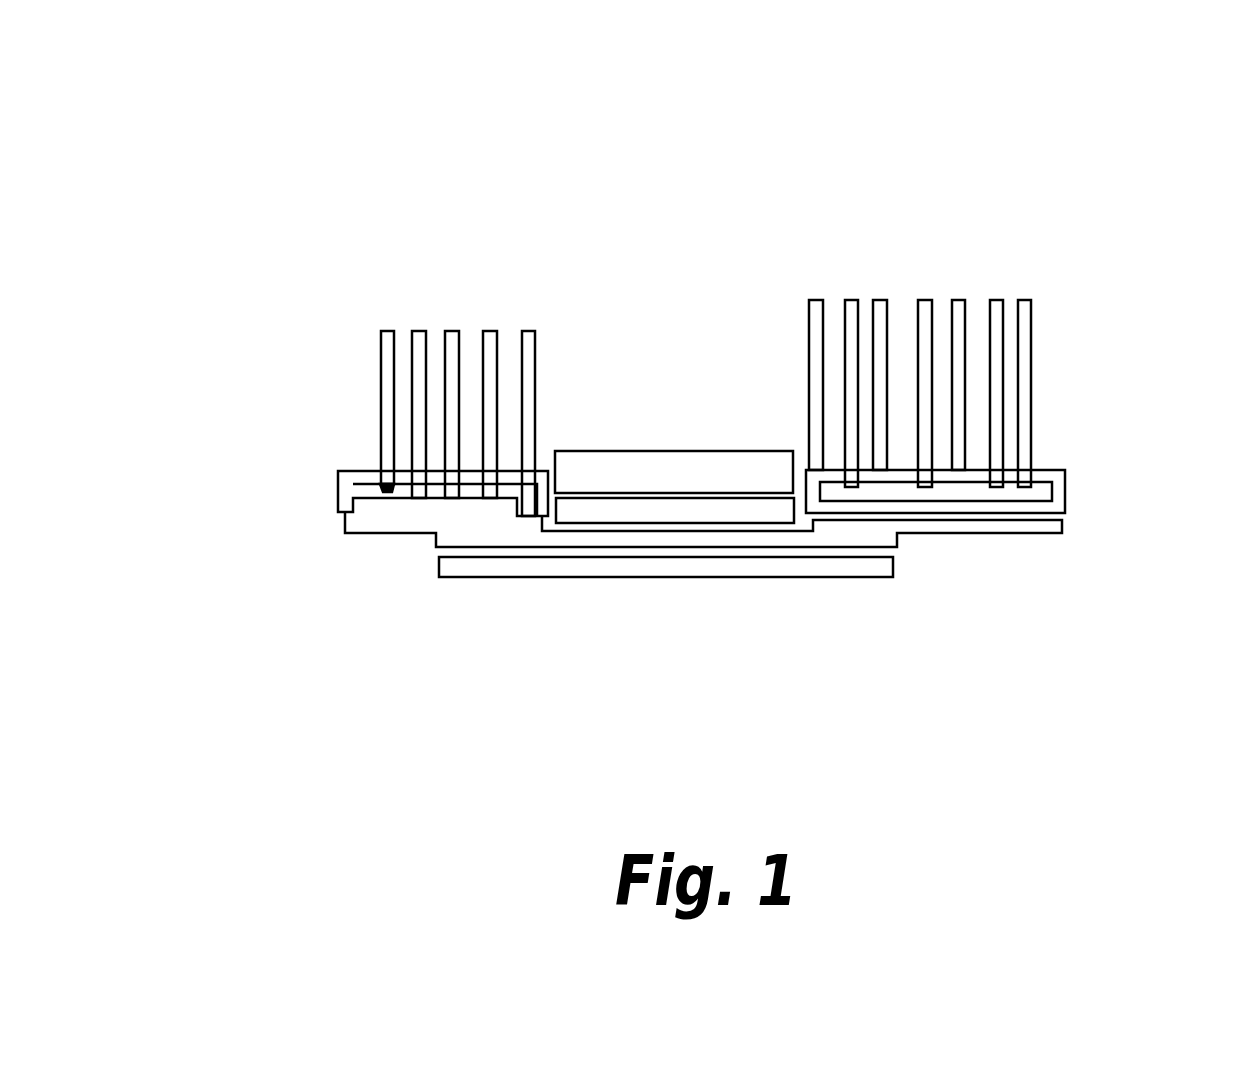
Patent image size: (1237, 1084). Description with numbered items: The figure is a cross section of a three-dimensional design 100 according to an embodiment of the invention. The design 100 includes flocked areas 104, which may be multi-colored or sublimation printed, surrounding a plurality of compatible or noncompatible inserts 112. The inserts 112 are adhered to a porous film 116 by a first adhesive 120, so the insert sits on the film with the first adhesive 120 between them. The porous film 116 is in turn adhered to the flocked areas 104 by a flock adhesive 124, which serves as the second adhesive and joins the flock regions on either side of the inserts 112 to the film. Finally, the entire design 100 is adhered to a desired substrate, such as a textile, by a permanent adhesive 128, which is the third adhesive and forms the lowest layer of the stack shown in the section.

The design 100 is at (791, 213).
The flocked areas 104 is at (550, 318).
The inserts 112 is at (682, 450).
The porous film 116 is at (345, 533).
The first adhesive 120 is at (582, 523).
The flock adhesive 124 is at (338, 492).
The permanent adhesive 128 is at (753, 577).